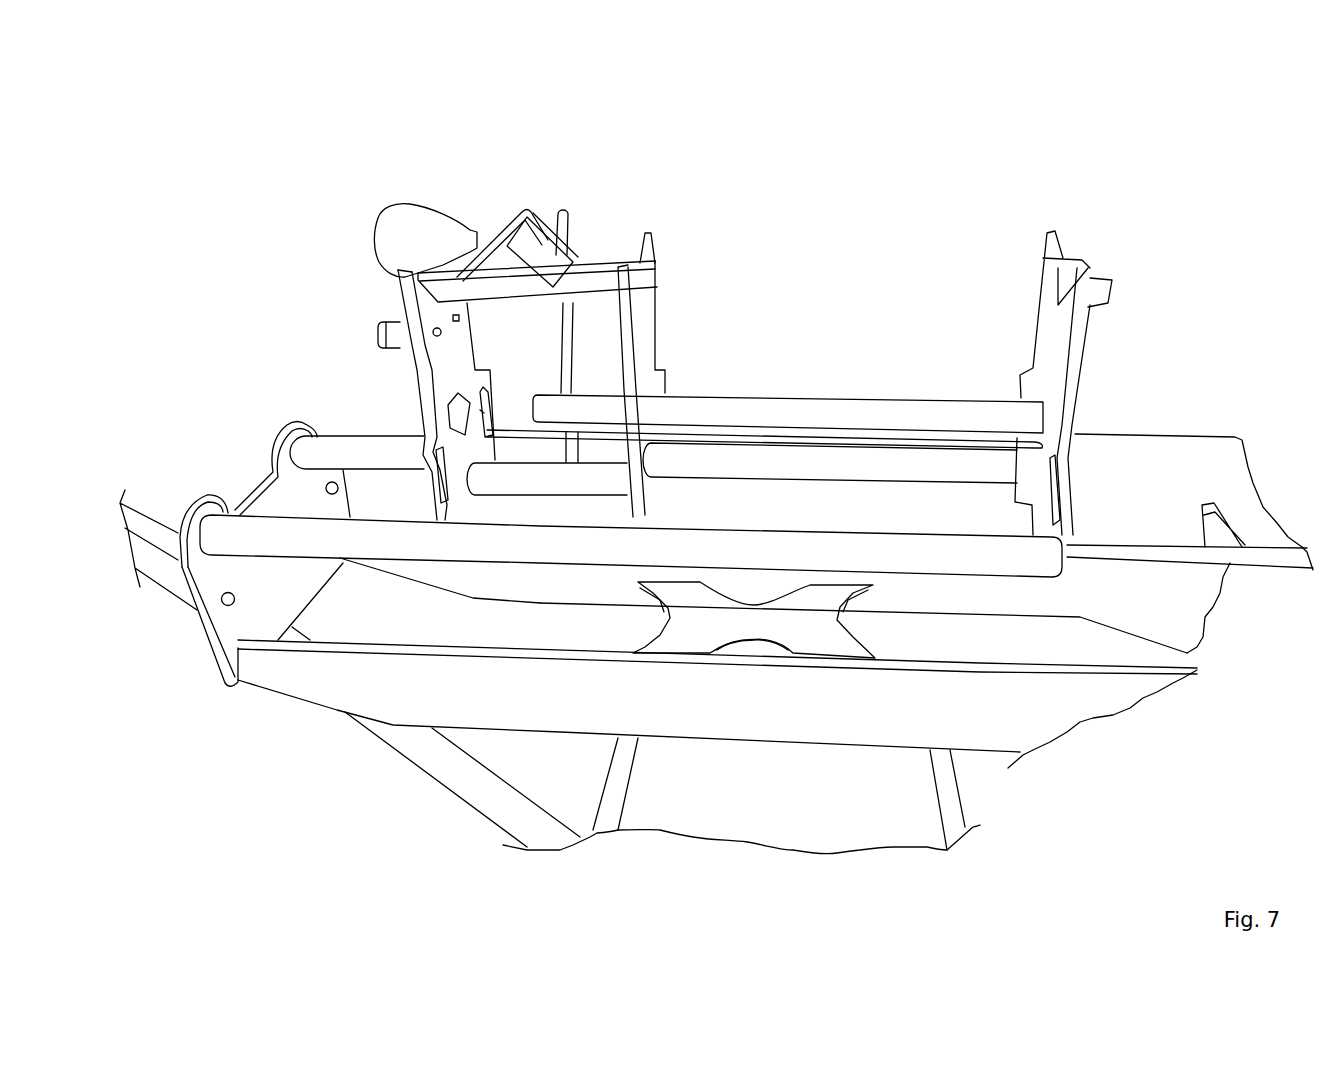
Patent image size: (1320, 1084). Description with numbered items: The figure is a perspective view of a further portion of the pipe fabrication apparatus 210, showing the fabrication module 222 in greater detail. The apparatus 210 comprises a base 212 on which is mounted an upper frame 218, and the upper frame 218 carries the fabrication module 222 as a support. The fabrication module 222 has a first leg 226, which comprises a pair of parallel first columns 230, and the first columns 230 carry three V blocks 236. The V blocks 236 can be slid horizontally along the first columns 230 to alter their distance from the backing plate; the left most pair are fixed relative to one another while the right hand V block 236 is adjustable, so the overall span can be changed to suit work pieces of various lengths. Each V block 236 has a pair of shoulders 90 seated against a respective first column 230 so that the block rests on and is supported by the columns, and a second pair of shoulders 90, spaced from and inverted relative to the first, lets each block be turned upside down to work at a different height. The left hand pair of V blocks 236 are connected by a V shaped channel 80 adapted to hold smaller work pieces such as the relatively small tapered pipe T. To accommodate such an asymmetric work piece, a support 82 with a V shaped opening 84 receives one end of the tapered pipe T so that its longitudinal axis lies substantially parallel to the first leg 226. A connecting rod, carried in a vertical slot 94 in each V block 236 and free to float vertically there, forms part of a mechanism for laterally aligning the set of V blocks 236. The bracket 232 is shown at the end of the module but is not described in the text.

The apparatus 210 is at (206, 167).
The base 212 is at (278, 692).
The upper frame 218 is at (388, 707).
The fabrication module 222 is at (1178, 432).
The first leg 226 is at (1070, 580).
The first columns 230 is at (337, 457).
The hook bracket 232 is at (277, 497).
The V blocks 236 is at (643, 338).
The V shaped channel 80 is at (653, 267).
The support 82 is at (552, 253).
The V shaped opening 84 is at (510, 230).
The shoulders 90 is at (640, 423).
The vertical slot 94 is at (570, 210).
The tapered pipe T is at (393, 227).